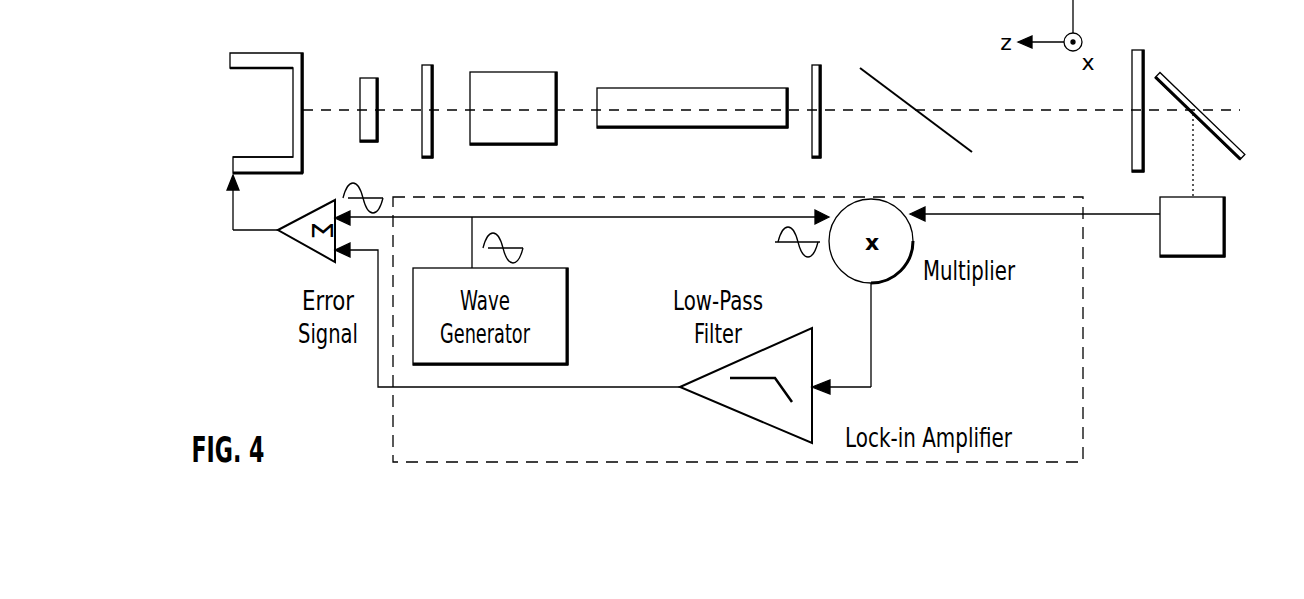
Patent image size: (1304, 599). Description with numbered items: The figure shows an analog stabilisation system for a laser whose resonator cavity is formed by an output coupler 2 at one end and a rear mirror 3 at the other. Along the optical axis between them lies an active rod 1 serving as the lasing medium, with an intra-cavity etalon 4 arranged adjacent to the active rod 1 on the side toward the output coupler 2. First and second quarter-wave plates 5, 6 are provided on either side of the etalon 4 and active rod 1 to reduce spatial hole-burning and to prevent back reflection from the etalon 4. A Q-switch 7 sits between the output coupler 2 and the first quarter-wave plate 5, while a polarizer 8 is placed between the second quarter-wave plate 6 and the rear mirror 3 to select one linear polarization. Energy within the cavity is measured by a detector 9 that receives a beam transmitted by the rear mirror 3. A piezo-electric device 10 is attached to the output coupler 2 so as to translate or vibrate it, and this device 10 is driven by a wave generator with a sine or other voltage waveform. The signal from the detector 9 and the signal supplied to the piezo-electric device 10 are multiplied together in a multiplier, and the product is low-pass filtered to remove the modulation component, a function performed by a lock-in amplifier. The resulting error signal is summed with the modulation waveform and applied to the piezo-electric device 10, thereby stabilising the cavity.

The active rod 1 is at (692, 92).
The output coupler 2 is at (269, 95).
The rear mirror 3 is at (1137, 94).
The intra-cavity etalon 4 is at (513, 94).
The first quarter-wave plate 5 is at (428, 93).
The second quarter-wave plate 6 is at (816, 95).
The Q-switch 7 is at (369, 94).
The polarizer 8 is at (916, 113).
The detector 9 is at (1192, 227).
The piezo-electric device 10 is at (265, 177).